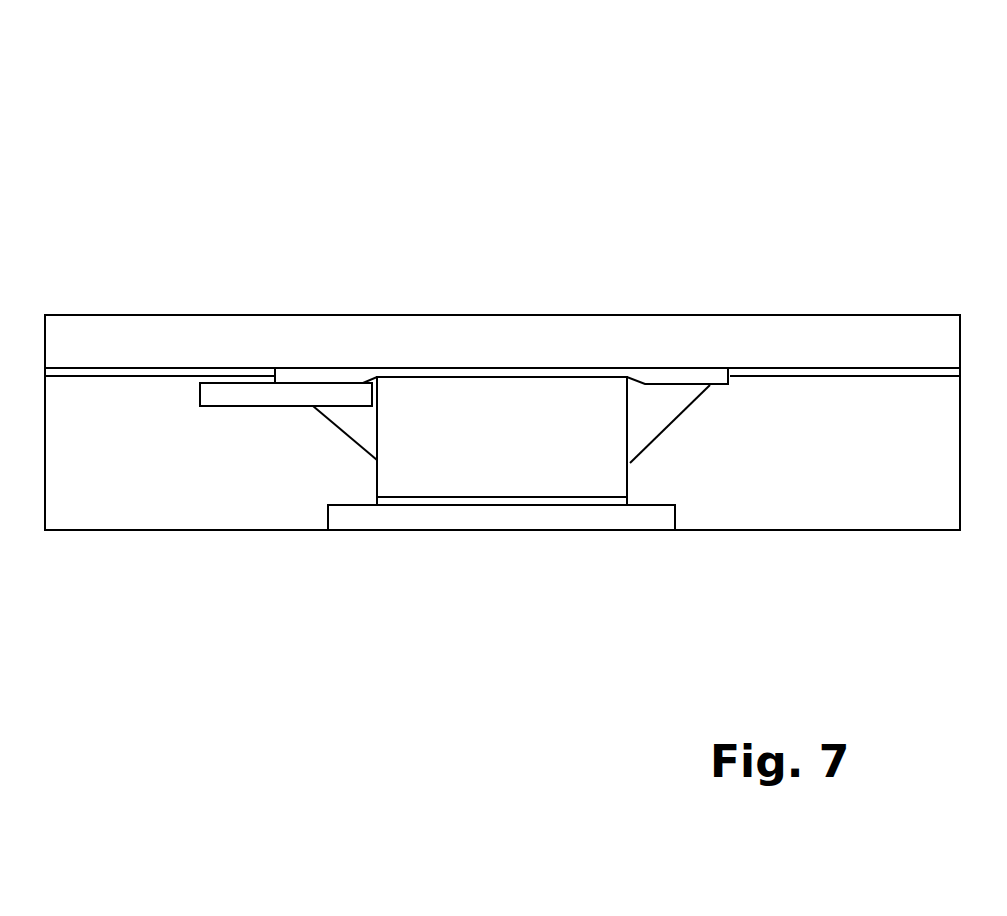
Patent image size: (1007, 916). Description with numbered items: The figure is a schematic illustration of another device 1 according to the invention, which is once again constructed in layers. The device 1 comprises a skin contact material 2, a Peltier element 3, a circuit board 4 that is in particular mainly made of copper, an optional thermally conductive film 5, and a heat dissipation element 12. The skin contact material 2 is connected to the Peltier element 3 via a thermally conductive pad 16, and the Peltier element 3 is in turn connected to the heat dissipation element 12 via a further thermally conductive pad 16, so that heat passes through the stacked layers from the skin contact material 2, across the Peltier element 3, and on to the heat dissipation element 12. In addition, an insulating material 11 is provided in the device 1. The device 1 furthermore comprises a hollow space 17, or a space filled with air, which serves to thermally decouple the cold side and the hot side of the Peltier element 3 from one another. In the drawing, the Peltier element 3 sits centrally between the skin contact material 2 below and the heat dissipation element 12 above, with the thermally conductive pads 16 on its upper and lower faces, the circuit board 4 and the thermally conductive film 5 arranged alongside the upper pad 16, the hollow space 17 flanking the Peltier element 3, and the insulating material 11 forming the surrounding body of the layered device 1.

The device 1 is at (380, 186).
The skin contact material 2 is at (407, 518).
The Peltier element 3 is at (493, 465).
The circuit board 4 is at (240, 392).
The thermally conductive film 5 is at (192, 370).
The insulating material 11 is at (137, 485).
The heat dissipation element 12 is at (732, 338).
The thermally conductive pad 16 is at (583, 372).
The hollow space 17 is at (665, 403).